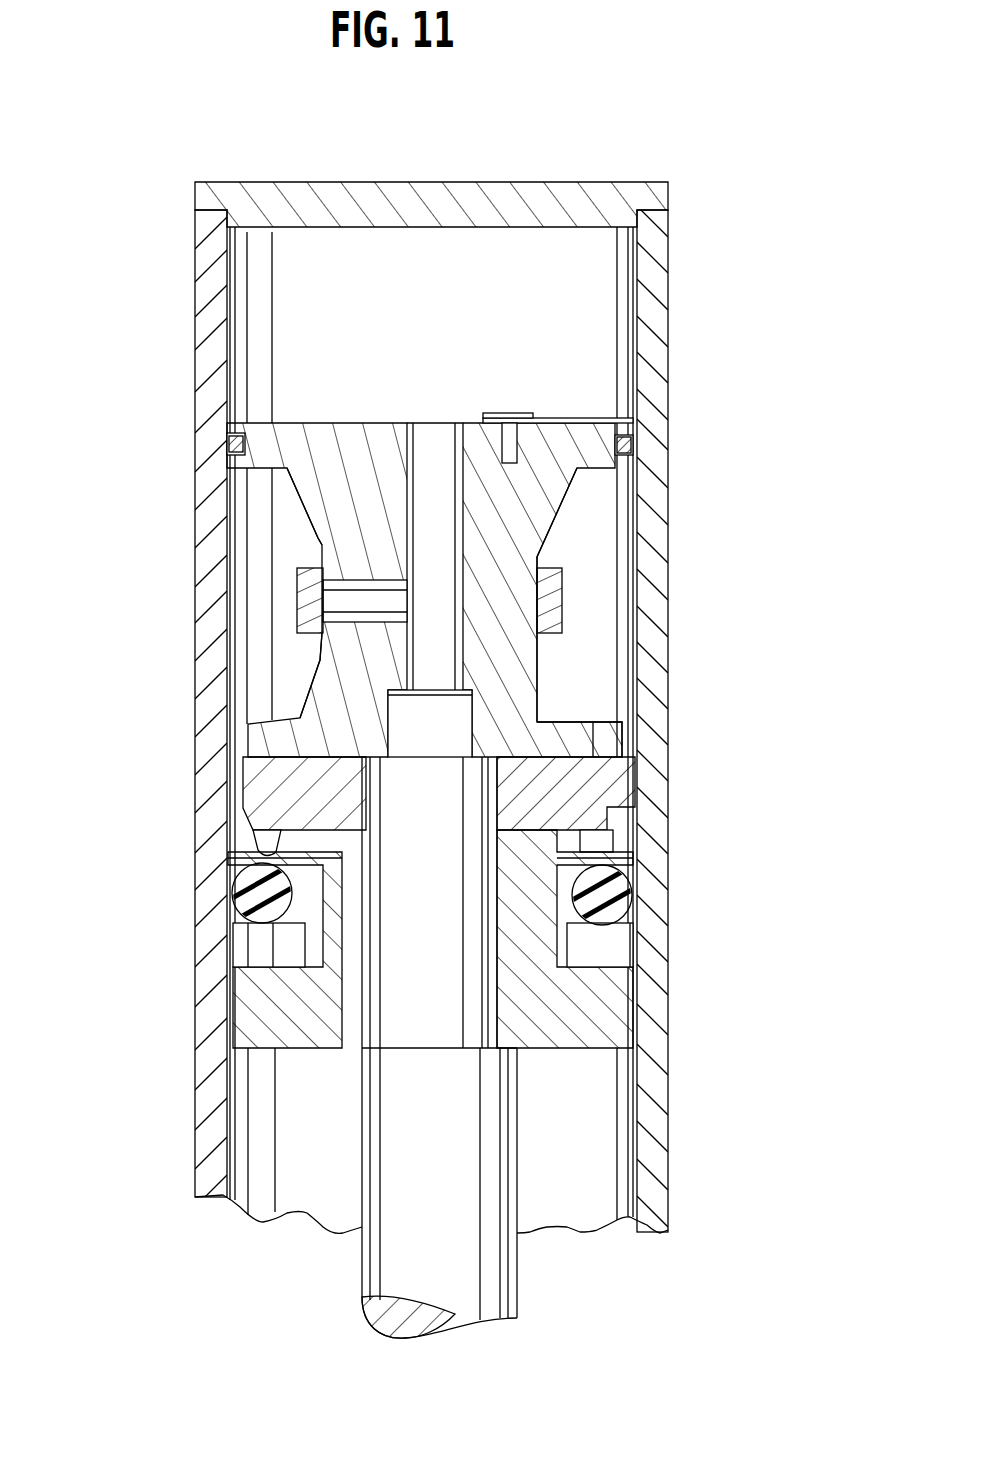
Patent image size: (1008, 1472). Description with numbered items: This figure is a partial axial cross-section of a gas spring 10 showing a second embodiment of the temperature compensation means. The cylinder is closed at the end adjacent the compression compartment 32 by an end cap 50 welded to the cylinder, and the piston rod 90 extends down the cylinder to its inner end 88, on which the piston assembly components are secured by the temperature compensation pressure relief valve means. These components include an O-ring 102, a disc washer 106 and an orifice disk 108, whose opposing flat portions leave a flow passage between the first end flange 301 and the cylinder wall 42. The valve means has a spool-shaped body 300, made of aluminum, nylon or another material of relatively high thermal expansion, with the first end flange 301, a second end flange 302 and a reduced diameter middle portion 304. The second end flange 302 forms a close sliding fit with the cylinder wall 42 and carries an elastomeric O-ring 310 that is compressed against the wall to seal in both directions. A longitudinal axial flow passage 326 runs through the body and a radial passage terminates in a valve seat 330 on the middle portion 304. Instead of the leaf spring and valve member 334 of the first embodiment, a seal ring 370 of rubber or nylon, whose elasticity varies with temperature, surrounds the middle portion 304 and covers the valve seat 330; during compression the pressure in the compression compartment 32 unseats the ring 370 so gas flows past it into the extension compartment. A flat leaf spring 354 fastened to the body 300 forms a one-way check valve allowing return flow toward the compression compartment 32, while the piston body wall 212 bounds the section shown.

The actuator assembly 10 is at (688, 265).
The compression compartment 32 is at (533, 250).
The cylinder wall 42 is at (657, 1146).
The end cap 50 is at (463, 182).
The inner end of the piston rod 88 is at (490, 1290).
The rod sleeve 90 is at (413, 977).
The O-ring 102 is at (640, 907).
The disc washer 106 is at (633, 843).
The orifice disk 108 is at (600, 786).
The piston body wall 212 is at (545, 690).
The body 300 is at (543, 500).
The first end flange 301 is at (608, 738).
The second end flange 302 is at (292, 428).
The middle portion 304 is at (337, 643).
The O-ring 310 is at (628, 432).
The longitudinal axial flow passage 326 is at (428, 430).
The valve seat 330 is at (322, 545).
The valve member 334 is at (290, 600).
The flat leaf spring 354 is at (567, 420).
The seal ring 370 is at (560, 587).